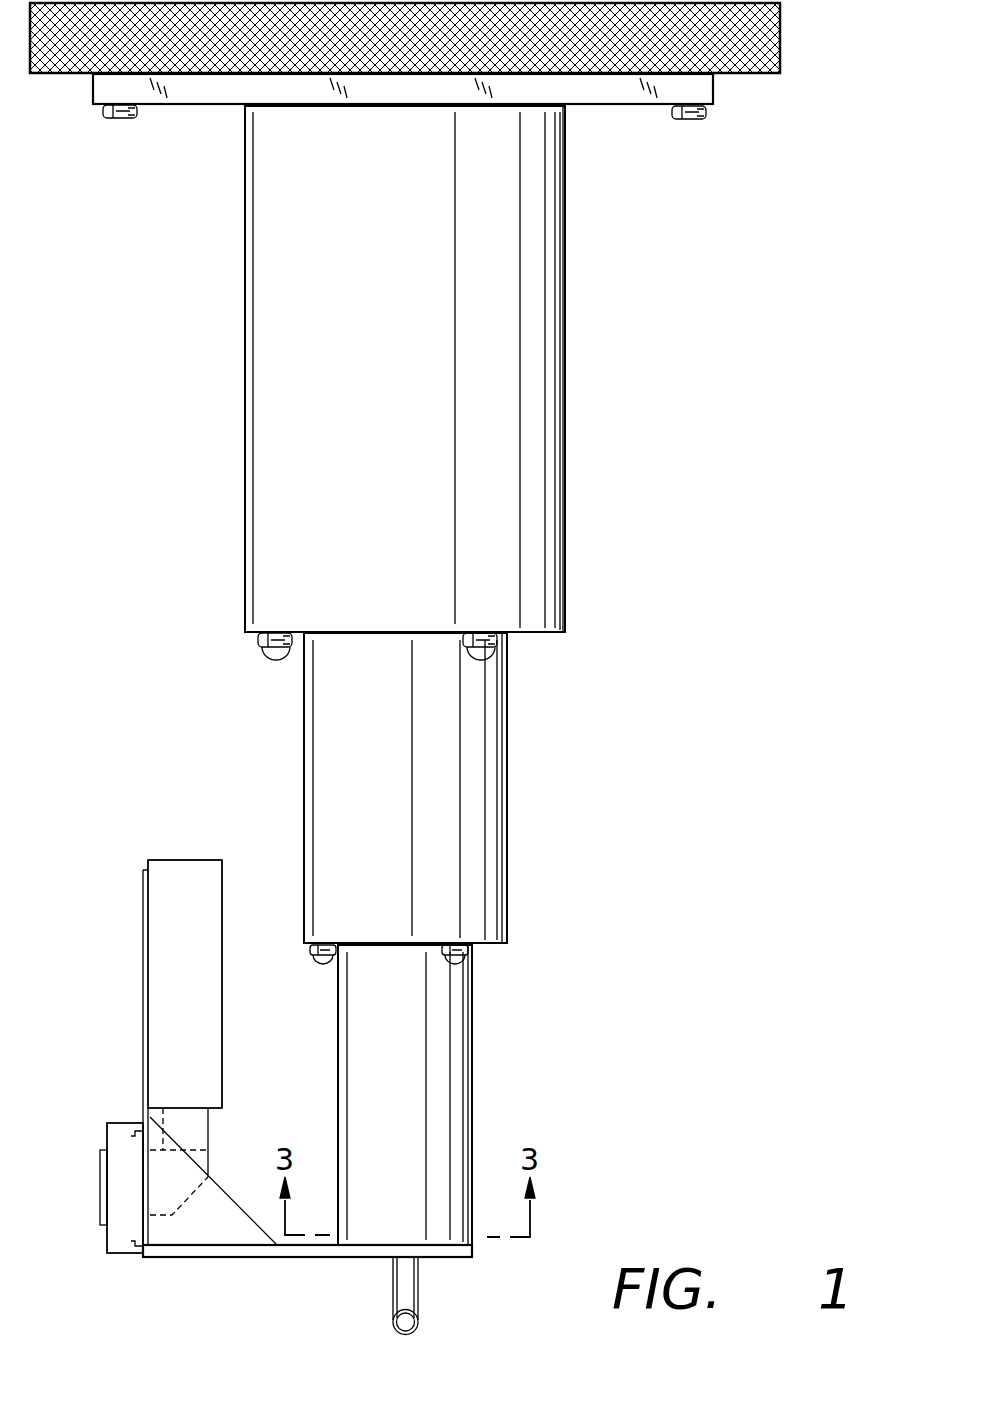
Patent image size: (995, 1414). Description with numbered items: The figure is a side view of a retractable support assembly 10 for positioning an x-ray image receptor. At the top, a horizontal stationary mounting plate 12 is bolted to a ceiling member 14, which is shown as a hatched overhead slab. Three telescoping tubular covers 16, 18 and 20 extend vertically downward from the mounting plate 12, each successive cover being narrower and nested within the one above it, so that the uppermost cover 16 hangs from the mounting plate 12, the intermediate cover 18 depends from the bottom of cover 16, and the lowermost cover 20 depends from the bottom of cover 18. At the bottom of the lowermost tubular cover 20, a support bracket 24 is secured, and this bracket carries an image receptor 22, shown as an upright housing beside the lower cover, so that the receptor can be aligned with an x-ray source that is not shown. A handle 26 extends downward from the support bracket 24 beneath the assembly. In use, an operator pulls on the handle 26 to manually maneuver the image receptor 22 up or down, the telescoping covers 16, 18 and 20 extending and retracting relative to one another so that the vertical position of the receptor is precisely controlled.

The retractable support assembly 10 is at (473, 675).
The mounting plate 12 is at (713, 96).
The ceiling member 14 is at (780, 40).
The telescoping tubular cover 16 is at (565, 312).
The telescoping tubular cover 18 is at (507, 838).
The telescoping tubular cover 20 is at (472, 1066).
The image receptor 22 is at (139, 978).
The support bracket 24 is at (247, 1258).
The handle 26 is at (427, 1324).